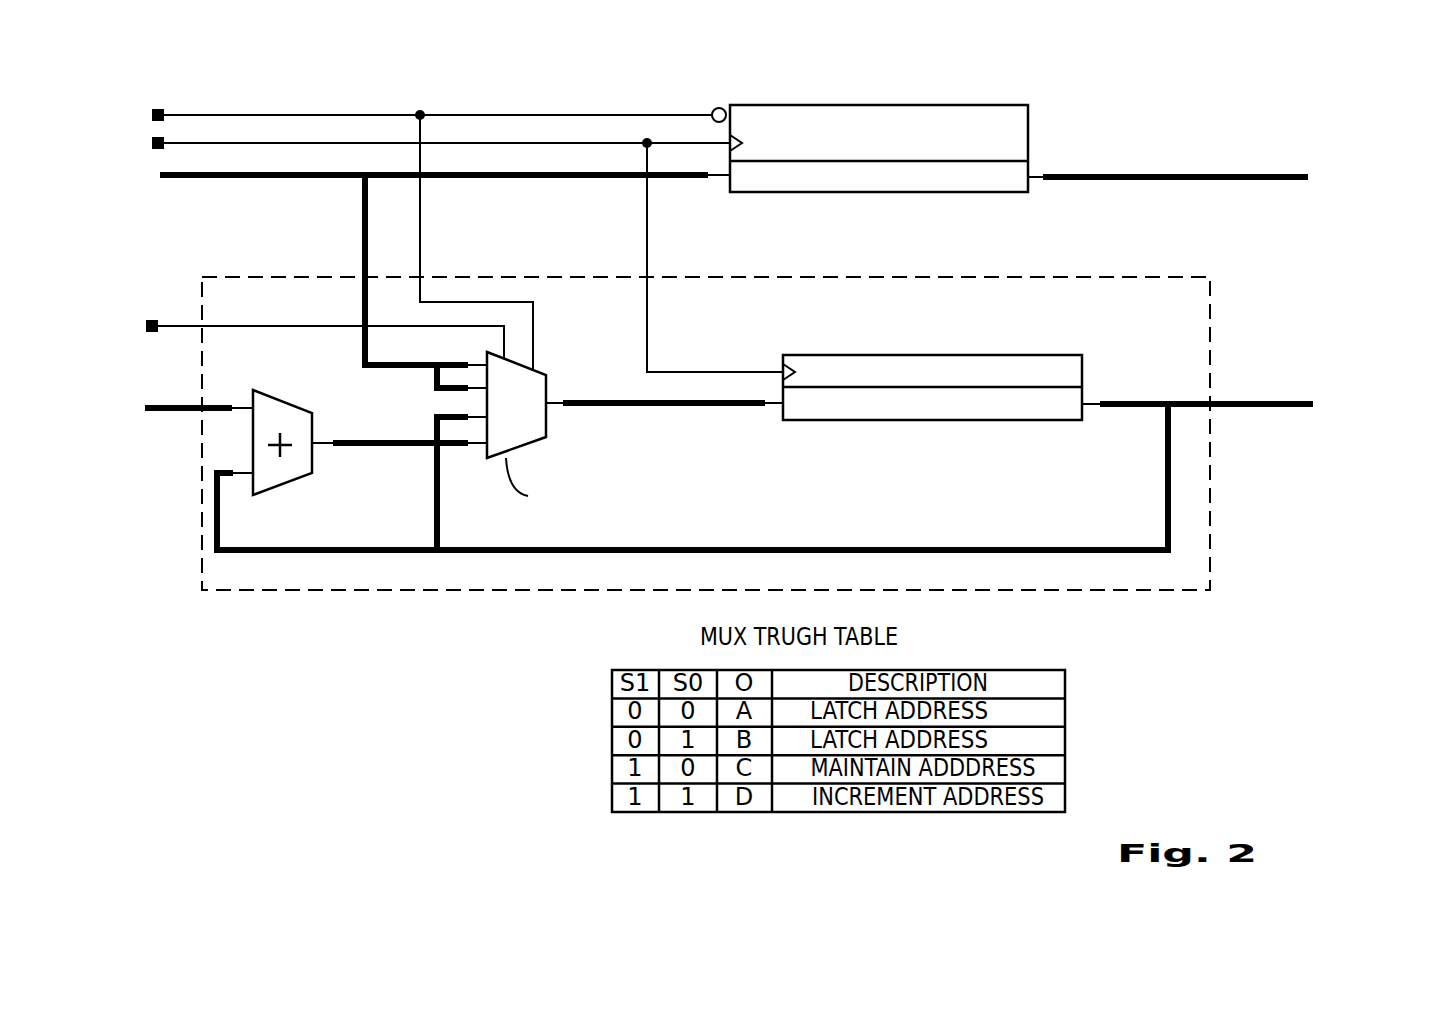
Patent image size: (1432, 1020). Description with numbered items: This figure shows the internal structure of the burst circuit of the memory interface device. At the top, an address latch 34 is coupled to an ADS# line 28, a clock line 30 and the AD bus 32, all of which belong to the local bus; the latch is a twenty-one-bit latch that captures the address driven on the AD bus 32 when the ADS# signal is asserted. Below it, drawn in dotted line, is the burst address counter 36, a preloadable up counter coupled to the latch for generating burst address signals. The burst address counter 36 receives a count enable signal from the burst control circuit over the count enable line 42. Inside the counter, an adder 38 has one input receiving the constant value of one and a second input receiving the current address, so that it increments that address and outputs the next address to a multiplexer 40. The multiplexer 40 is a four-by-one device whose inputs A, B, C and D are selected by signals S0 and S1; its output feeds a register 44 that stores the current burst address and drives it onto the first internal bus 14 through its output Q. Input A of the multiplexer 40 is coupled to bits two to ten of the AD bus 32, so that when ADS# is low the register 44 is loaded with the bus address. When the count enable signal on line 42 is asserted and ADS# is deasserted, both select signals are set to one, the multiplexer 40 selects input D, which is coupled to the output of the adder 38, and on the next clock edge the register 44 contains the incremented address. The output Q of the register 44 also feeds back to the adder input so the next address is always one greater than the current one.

The first internal bus 14 is at (1237, 410).
The ADS# line 28 is at (527, 113).
The clock line 30 is at (590, 141).
The AD bus 32 is at (478, 178).
The address latch 34 is at (920, 105).
The burst address counter 36 is at (1108, 591).
The adder 38 is at (293, 483).
The multiplexer 40 is at (530, 447).
The count enable line 42 is at (168, 328).
The register 44 is at (920, 355).